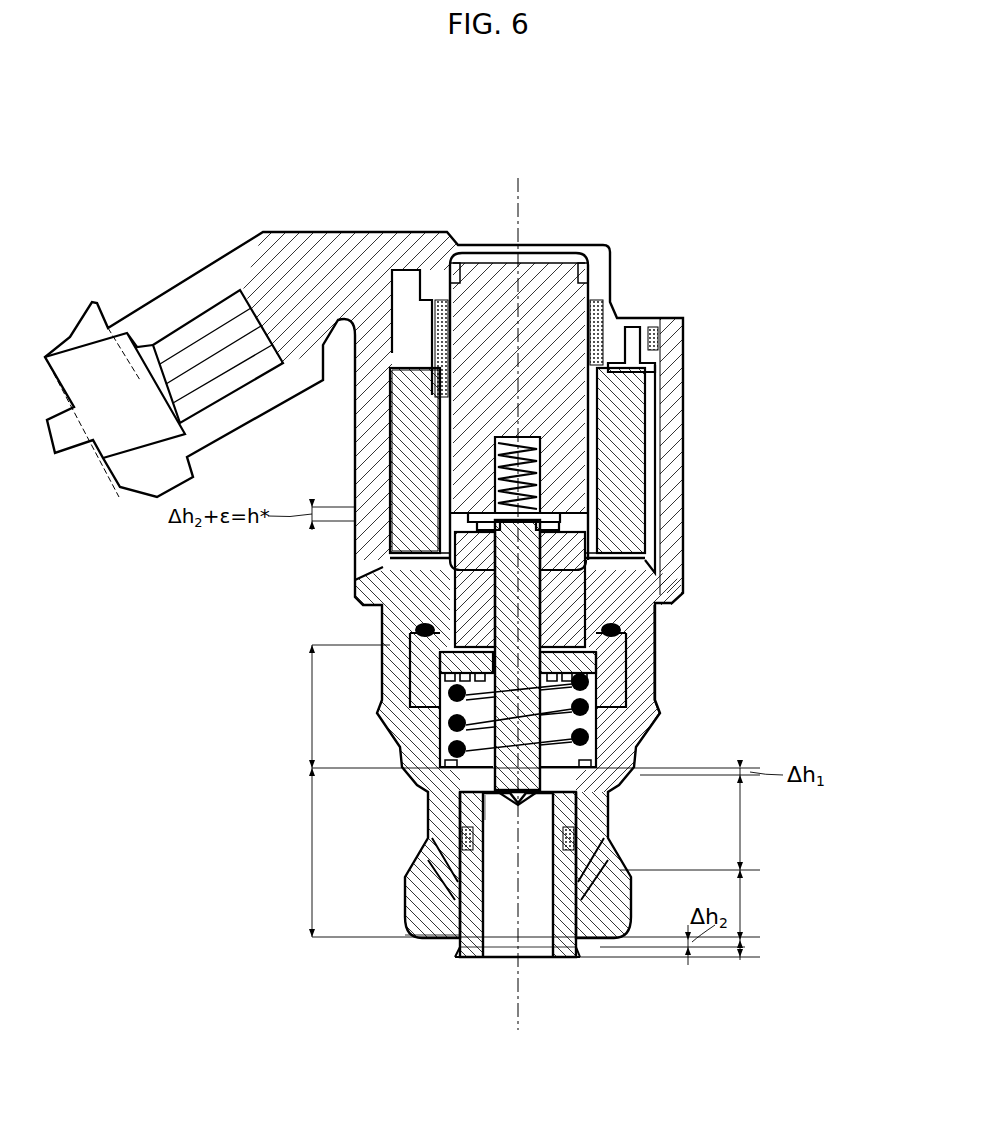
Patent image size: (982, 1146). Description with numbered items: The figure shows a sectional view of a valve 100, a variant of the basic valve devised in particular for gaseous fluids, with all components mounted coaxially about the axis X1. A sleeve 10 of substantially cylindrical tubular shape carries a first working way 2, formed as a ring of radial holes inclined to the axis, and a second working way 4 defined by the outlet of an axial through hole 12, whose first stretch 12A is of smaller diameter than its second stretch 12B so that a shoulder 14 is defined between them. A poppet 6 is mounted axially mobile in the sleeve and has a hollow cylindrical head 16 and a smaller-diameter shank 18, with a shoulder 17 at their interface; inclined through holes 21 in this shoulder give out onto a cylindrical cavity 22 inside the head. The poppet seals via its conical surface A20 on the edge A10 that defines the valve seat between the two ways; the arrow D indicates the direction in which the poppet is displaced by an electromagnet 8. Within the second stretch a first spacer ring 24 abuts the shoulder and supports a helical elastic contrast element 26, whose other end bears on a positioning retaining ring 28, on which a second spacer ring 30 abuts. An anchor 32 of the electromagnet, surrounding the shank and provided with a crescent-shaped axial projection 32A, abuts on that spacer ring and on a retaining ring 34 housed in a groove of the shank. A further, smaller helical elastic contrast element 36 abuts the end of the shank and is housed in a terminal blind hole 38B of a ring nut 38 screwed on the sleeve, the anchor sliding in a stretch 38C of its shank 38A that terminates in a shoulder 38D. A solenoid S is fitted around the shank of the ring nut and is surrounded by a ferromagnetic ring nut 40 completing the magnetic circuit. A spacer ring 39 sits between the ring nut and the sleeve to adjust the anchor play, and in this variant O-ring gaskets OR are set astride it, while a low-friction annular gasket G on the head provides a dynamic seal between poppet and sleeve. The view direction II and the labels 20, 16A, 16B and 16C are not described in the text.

The valve 100 is at (780, 190).
The axis X1 is at (518, 212).
The electromagnet 8 is at (687, 412).
The ring nut 40 is at (355, 403).
The ring nut 38 is at (385, 620).
The shank 38A is at (598, 300).
The terminal blind hole 38B is at (550, 460).
The stretch 38C is at (395, 557).
The shoulder 38D is at (477, 490).
The elastic contrast element 36 is at (527, 433).
The retaining ring 34 is at (650, 470).
The solenoid S is at (650, 490).
The anchor 32 is at (657, 594).
The crescent-shaped axial projection 32A is at (650, 533).
The shank 18 is at (653, 627).
The second spacer ring 30 is at (653, 653).
The first spacer ring 24 is at (660, 717).
The sleeve 10 is at (646, 753).
The section view direction II is at (705, 743).
The shoulder 17 is at (610, 793).
The low-friction annular gasket G is at (592, 832).
The first working way 2 is at (425, 865).
The axial through hole 12 is at (622, 906).
The head 16 is at (545, 903).
The poppet 6 is at (503, 934).
The arrow D is at (528, 980).
The conical surface A20 is at (470, 962).
The nozzle lip 20 is at (455, 950).
The second working way 4 is at (450, 943).
The edge A10 is at (387, 933).
The through holes 21 is at (510, 796).
The cavity 22 is at (528, 803).
The shoulder 14 is at (430, 800).
The elastic contrast element 26 is at (415, 735).
The positioning retaining ring 28 is at (420, 690).
The first stretch 12A is at (511, 852).
The second stretch 12B is at (512, 706).
The spacer ring 39 is at (390, 645).
The O-ring gaskets OR is at (390, 590).
The passage section A 16A is at (703, 815).
The passage section B 16B is at (762, 905).
The passage section C 16C is at (745, 948).